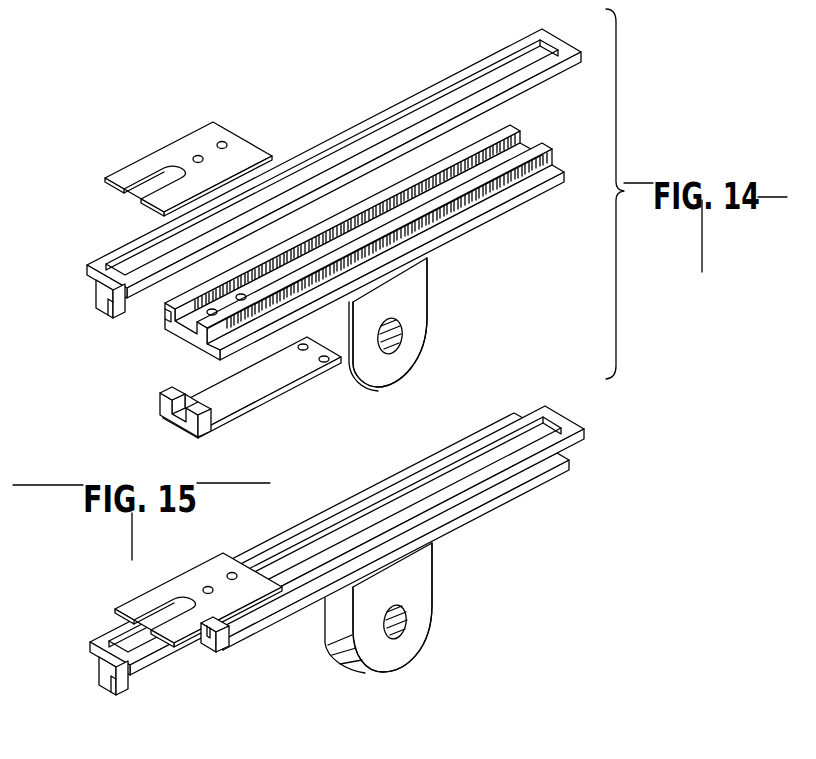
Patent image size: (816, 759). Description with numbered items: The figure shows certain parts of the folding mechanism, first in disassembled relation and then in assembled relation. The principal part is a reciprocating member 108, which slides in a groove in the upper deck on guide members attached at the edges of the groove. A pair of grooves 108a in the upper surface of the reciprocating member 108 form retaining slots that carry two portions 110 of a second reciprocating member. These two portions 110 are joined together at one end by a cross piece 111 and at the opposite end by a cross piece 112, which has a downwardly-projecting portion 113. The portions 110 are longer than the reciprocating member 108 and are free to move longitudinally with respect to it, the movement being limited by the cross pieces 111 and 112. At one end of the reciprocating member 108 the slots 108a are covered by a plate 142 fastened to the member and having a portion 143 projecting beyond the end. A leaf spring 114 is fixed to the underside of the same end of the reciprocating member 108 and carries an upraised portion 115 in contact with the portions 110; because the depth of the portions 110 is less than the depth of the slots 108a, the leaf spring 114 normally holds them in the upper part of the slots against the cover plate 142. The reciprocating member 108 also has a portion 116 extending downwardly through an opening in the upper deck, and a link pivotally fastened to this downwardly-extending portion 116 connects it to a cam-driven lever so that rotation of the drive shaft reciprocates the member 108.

In FIG. 14, the reciprocating member 108 is at (343, 243).
In FIG. 15, the reciprocating member 108 is at (470, 493).
In FIG. 14, the grooves 108a is at (545, 145).
In FIG. 15, the grooves 108a is at (346, 505).
In FIG. 14, the portions of second reciprocating member 110 is at (368, 123).
In FIG. 15, the portions of second reciprocating member 110 is at (337, 540).
In FIG. 14, the cross piece 111 is at (550, 42).
In FIG. 15, the cross piece 111 is at (548, 408).
In FIG. 14, the cross piece 112 is at (87, 270).
In FIG. 15, the cross piece 112 is at (90, 642).
In FIG. 14, the downwardly-projecting portion 113 is at (107, 305).
In FIG. 15, the downwardly-projecting portion 113 is at (110, 673).
In FIG. 14, the leaf spring 114 is at (285, 377).
In FIG. 14, the upraised portion 115 is at (208, 420).
In FIG. 15, the upraised portion 115 is at (212, 652).
In FIG. 14, the downwardly-extending portion 116 is at (417, 298).
In FIG. 15, the downwardly-extending portion 116 is at (422, 582).
In FIG. 14, the cover plate 142 is at (178, 147).
In FIG. 15, the cover plate 142 is at (192, 577).
In FIG. 14, the projecting portion 143 is at (120, 175).
In FIG. 15, the projecting portion 143 is at (133, 610).